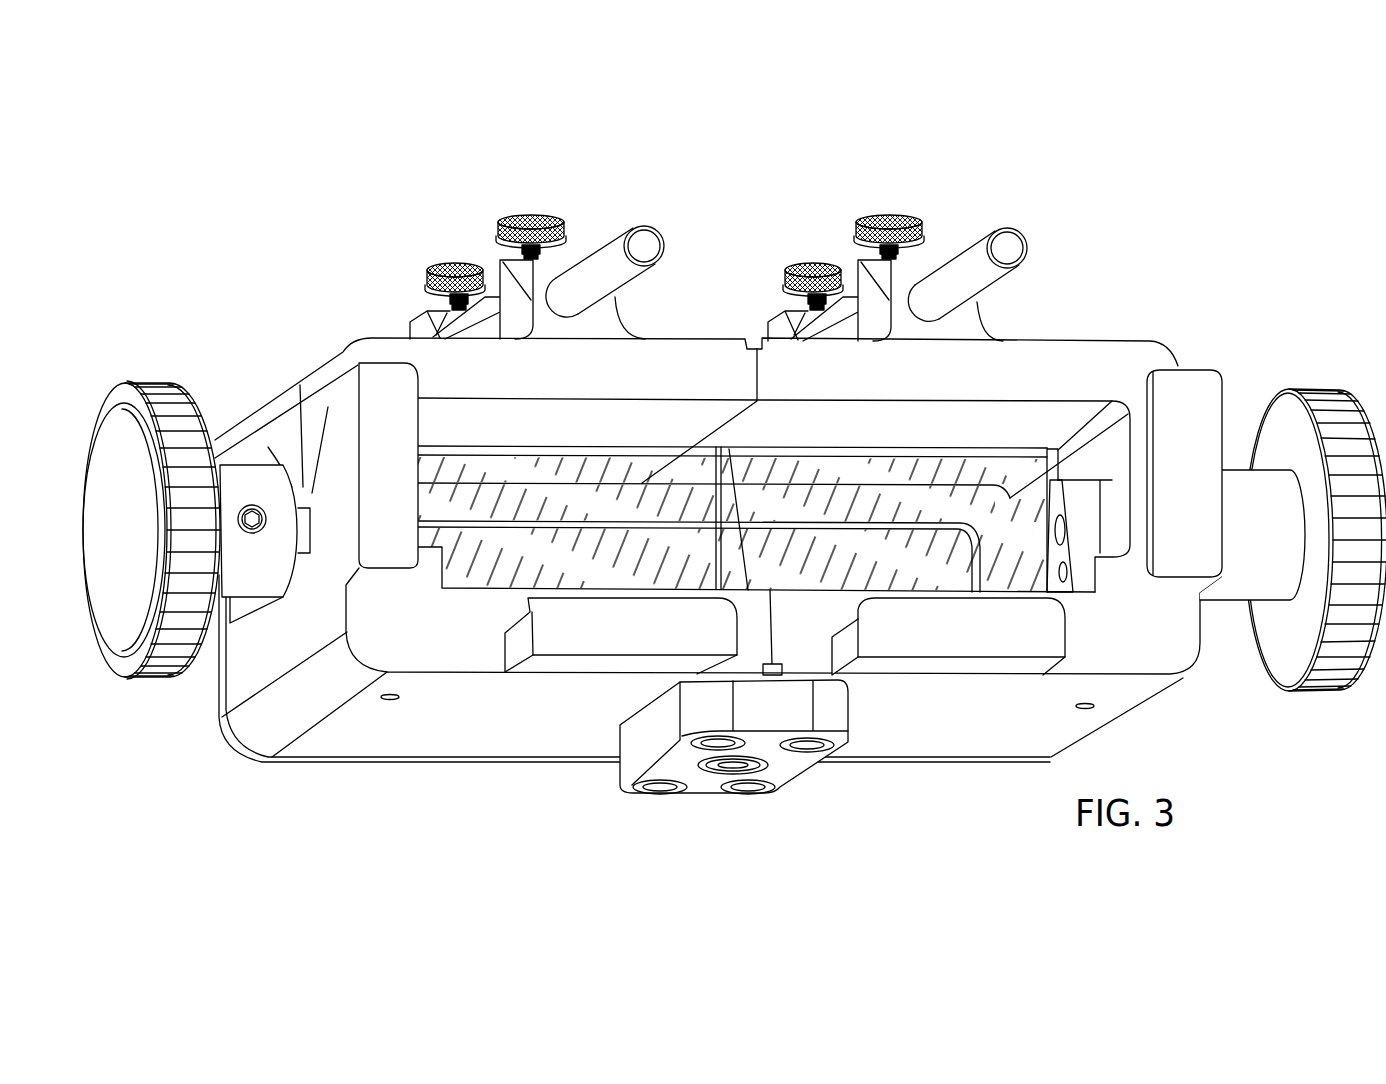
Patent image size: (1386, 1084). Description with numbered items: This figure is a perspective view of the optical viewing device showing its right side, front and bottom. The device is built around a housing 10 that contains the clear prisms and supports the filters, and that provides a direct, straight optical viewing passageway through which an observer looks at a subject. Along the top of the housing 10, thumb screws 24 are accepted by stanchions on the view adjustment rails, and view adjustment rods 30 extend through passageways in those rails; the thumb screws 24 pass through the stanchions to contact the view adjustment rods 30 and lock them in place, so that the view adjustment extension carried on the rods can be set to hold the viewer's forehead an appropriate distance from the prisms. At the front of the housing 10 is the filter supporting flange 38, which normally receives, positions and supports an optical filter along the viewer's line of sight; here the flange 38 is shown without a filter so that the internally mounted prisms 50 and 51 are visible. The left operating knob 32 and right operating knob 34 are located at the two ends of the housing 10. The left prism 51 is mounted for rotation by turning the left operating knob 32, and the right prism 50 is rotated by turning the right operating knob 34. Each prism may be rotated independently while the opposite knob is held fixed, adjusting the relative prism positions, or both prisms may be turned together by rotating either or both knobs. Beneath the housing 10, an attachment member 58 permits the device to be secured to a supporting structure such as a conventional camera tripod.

The housing 10 is at (382, 777).
The thumb screws 24 is at (568, 223).
The view adjustment rods 30 is at (650, 246).
The left operating knob 32 is at (1279, 655).
The right operating knob 34 is at (113, 622).
The filter supporting flange 38 is at (380, 383).
The right prism 50 is at (625, 495).
The left prism 51 is at (981, 465).
The attachment member 58 is at (707, 787).